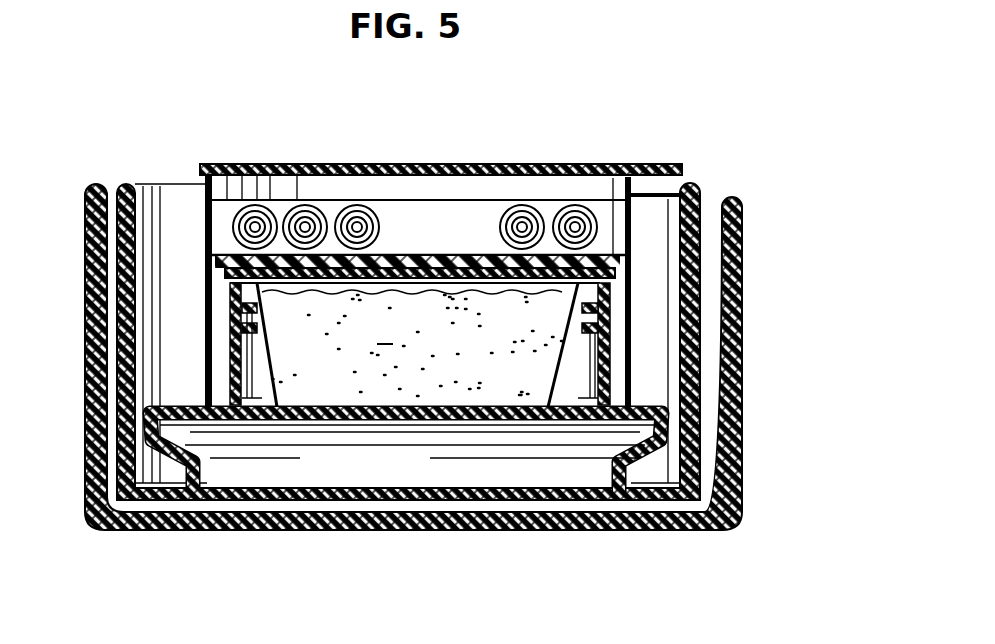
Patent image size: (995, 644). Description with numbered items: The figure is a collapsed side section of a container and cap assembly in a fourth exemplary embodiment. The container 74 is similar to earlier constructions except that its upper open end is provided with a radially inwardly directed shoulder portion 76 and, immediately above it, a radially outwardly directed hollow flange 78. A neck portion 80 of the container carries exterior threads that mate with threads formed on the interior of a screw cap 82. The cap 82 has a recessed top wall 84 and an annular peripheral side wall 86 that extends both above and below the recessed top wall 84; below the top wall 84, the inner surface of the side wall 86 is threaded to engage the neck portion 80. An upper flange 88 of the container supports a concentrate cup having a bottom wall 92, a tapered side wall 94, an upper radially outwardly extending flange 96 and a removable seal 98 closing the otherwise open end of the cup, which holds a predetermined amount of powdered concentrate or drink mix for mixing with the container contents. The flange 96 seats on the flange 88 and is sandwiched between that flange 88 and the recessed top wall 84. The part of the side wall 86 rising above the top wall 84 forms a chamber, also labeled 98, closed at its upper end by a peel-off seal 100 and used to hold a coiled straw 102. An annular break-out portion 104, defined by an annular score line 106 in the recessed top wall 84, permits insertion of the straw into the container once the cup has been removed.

The container 74 is at (783, 245).
The shoulder portion 76 is at (643, 490).
The hollow flange 78 is at (662, 412).
The neck portion 80 is at (615, 340).
The screw cap 82 is at (646, 230).
The recessed top wall 84 is at (470, 240).
The annular peripheral side wall 86 is at (205, 275).
The upper flange 88 is at (640, 292).
The bottom wall 92 is at (375, 412).
The tapered side wall 94 is at (272, 348).
The upper radially outwardly extending flange 96 is at (240, 288).
The removable seal 98 is at (282, 185).
The peel-off seal 100 is at (362, 165).
The coiled straw 102 is at (597, 225).
The annular break-out portion 104 is at (432, 245).
The annular score line 106 is at (466, 285).